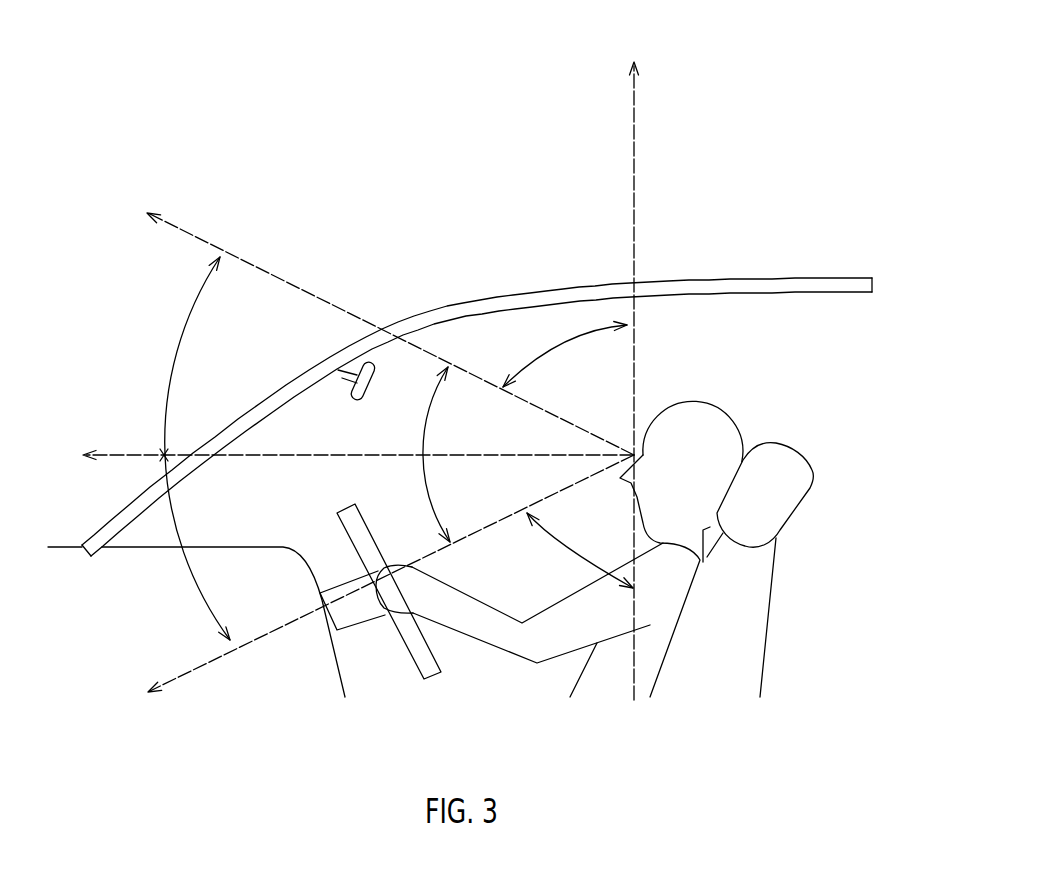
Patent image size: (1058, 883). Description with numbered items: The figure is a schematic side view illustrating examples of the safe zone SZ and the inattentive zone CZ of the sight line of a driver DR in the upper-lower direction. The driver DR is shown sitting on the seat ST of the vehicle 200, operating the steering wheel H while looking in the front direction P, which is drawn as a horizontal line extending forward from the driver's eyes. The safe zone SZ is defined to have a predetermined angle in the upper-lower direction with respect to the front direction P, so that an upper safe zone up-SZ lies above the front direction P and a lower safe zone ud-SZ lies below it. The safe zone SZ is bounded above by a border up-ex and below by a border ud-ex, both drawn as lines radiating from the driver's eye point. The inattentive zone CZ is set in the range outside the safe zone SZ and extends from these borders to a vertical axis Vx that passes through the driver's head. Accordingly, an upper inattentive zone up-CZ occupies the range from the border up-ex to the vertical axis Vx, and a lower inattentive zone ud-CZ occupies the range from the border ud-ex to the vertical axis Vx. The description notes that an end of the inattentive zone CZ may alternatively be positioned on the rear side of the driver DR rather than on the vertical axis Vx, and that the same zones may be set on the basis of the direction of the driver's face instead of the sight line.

The vehicle 200 is at (827, 280).
The driver DR is at (706, 442).
The seat ST is at (752, 593).
The steering wheel H is at (424, 673).
The vertical axis Vx is at (639, 364).
The front direction P is at (343, 455).
The border up-ex is at (344, 326).
The border ud-ex is at (344, 588).
The upper safe zone up-SZ is at (148, 356).
The lower safe zone ud-SZ is at (160, 547).
The safe zone SZ is at (411, 454).
The inattentive zone CZ is at (561, 468).
The upper inattentive zone up-CZ is at (530, 355).
The lower inattentive zone ud-CZ is at (503, 572).